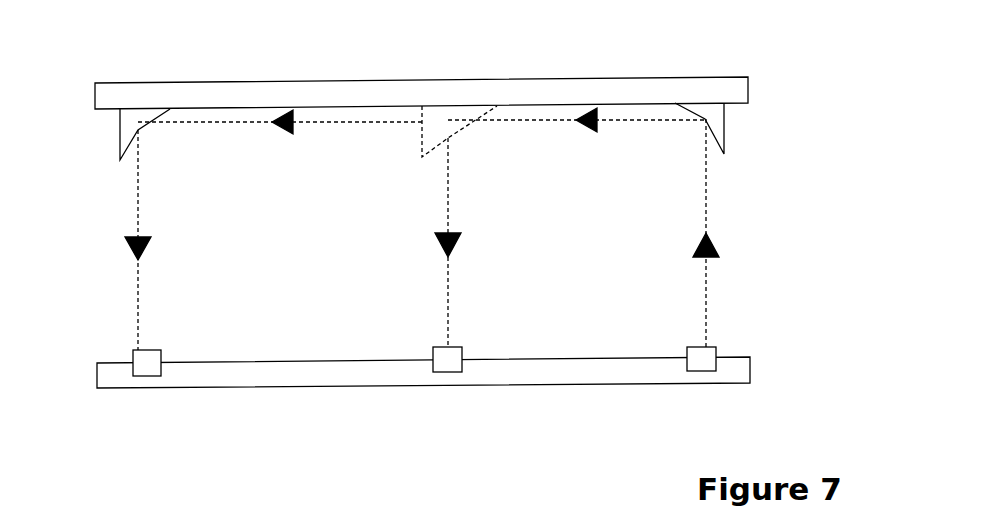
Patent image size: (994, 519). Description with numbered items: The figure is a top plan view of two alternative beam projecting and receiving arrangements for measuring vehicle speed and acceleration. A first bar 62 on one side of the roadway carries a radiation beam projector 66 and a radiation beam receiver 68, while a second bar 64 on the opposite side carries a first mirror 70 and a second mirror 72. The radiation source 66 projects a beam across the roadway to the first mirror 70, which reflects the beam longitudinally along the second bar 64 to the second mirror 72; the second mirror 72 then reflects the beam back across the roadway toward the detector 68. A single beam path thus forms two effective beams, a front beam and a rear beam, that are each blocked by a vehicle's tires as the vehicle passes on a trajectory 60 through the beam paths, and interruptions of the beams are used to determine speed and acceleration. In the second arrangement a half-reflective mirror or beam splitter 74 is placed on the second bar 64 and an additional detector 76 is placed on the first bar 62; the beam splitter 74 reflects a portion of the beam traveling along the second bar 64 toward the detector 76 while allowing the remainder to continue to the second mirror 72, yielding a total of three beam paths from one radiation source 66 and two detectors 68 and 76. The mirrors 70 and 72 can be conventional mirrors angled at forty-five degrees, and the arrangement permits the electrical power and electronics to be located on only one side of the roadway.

The trajectory 60 is at (750, 193).
The first bar 62 is at (510, 385).
The second bar 64 is at (483, 90).
The radiation beam projector 66 is at (716, 347).
The radiation beam receiver 68 is at (161, 350).
The first mirror 70 is at (718, 120).
The second mirror 72 is at (132, 125).
The half-reflective mirror 74 is at (432, 127).
The detector 76 is at (462, 347).